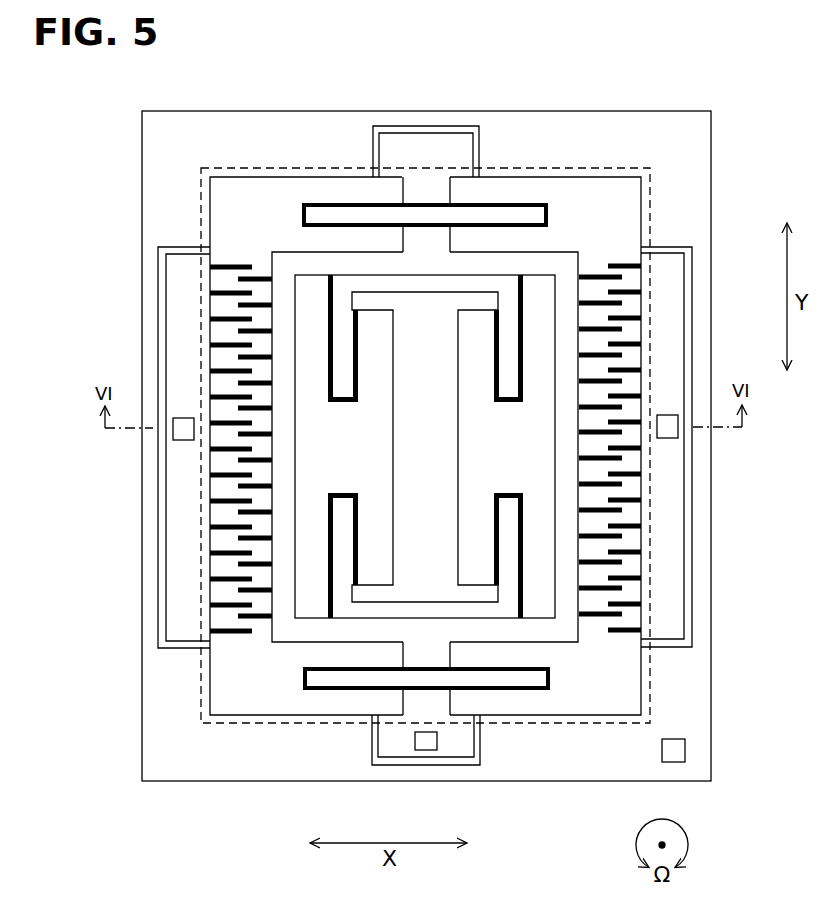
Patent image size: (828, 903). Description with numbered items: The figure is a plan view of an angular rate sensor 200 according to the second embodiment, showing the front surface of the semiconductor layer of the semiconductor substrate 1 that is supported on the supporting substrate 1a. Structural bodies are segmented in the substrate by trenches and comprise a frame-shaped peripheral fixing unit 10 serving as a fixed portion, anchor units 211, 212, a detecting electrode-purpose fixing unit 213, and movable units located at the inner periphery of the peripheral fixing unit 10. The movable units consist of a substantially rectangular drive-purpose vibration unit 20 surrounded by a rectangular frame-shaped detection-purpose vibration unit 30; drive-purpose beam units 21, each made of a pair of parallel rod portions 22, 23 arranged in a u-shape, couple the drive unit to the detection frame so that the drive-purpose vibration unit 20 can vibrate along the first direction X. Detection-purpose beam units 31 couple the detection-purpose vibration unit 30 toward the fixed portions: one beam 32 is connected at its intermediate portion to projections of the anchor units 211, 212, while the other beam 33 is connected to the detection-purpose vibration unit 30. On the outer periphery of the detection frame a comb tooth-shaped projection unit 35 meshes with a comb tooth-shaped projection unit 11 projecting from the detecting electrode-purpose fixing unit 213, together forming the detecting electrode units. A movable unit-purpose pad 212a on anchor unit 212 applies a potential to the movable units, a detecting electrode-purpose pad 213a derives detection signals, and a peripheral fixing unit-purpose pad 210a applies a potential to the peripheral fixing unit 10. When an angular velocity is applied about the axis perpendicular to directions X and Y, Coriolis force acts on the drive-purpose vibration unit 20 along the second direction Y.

The angular rate sensor 200 is at (345, 85).
The semiconductor substrate 1 is at (141, 175).
The supporting substrate 1a is at (163, 136).
The peripheral fixing unit 10 is at (160, 716).
The comb tooth-shaped projection unit 11 is at (227, 265).
The drive-purpose vibration unit 20 is at (408, 472).
The drive-purpose beam unit 21 is at (326, 345).
The parallel rod portion 22 is at (500, 524).
The parallel rod portion 23 is at (523, 572).
The detection-purpose vibration unit 30 is at (282, 372).
The detection-purpose beam unit 31 is at (461, 196).
The beam 32 is at (520, 216).
The beam 33 is at (491, 200).
The comb tooth-shaped projection unit 35 is at (258, 273).
The anchor unit 211 is at (400, 143).
The anchor unit 212 is at (389, 748).
The movable unit-purpose pad 212a is at (427, 746).
The detecting electrode-purpose fixing unit 213 is at (180, 352).
The detecting electrode-purpose pad 213a is at (183, 418).
The peripheral fixing unit-purpose pad 210a is at (678, 750).